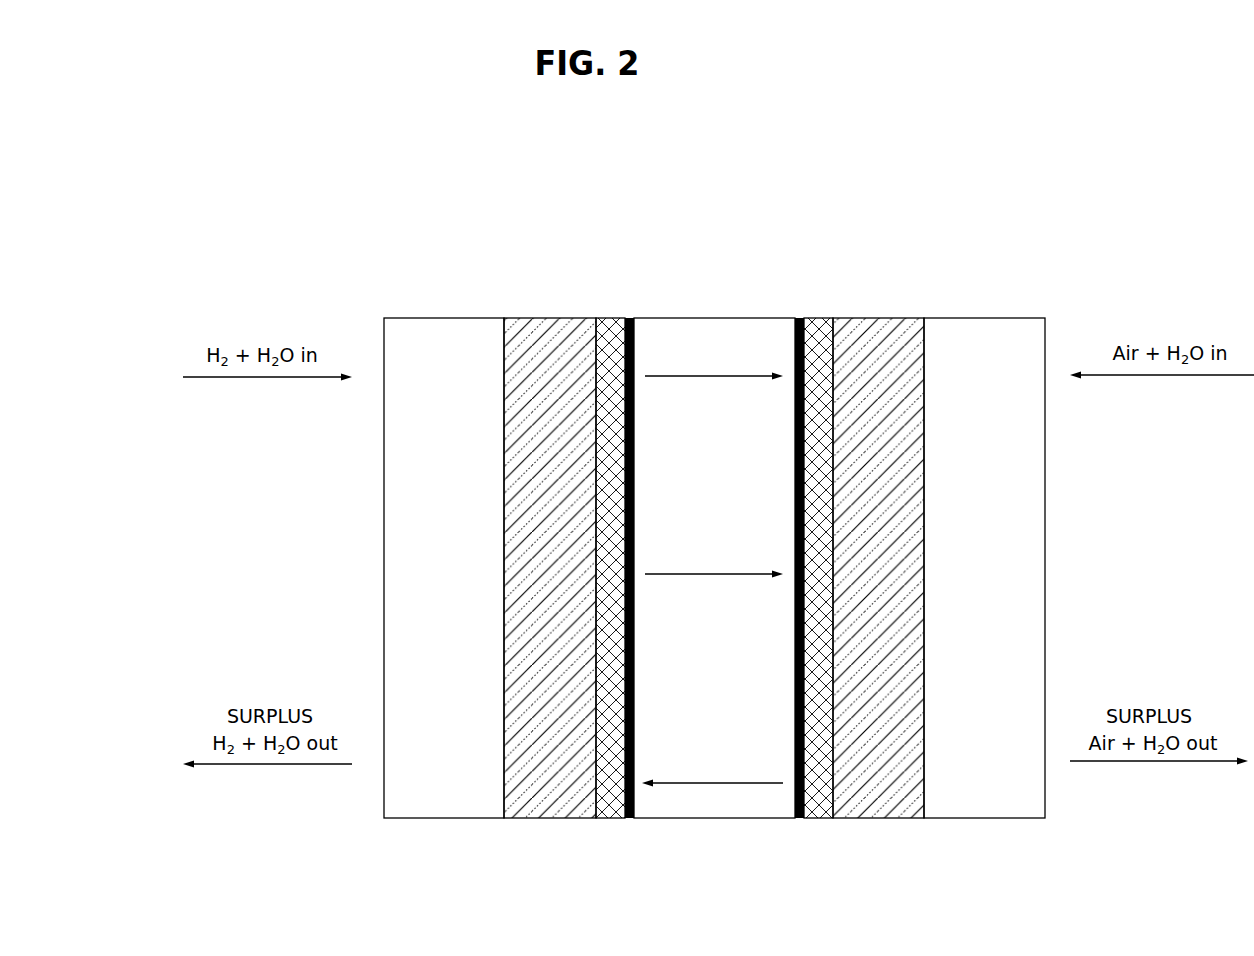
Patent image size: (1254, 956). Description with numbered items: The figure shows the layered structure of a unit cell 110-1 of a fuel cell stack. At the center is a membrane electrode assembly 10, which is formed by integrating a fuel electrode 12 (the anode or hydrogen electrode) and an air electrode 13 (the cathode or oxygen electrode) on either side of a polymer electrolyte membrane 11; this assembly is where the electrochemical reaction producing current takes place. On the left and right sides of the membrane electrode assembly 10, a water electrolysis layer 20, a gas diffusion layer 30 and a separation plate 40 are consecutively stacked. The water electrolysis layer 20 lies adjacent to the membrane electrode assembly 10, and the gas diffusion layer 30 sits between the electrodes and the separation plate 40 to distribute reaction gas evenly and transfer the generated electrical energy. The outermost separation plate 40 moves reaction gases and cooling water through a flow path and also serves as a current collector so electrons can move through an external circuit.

The unit cell 110-1 is at (426, 196).
The membrane electrode assembly 10 is at (645, 247).
The polymer electrolyte membrane 11 is at (707, 326).
The fuel electrode 12 is at (628, 318).
The air electrode 13 is at (800, 318).
The water electrolysis layer 20 is at (819, 322).
The gas diffusion layer 30 is at (878, 324).
The separation plate 40 is at (978, 324).